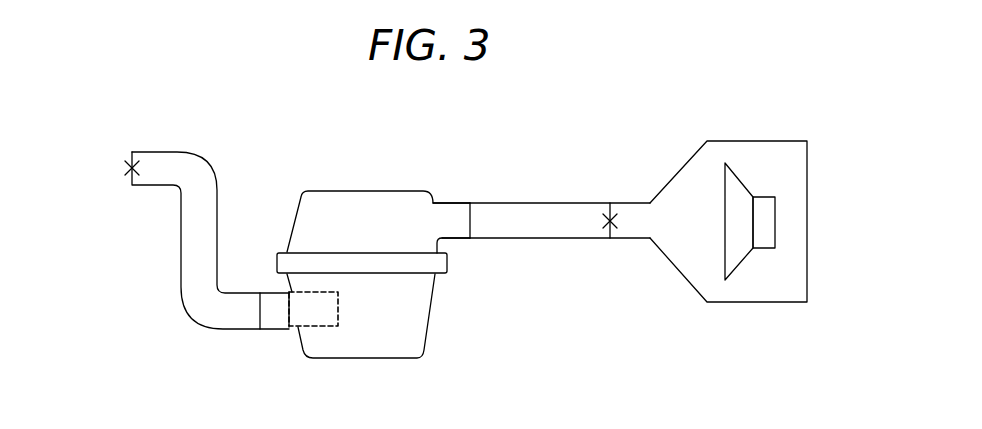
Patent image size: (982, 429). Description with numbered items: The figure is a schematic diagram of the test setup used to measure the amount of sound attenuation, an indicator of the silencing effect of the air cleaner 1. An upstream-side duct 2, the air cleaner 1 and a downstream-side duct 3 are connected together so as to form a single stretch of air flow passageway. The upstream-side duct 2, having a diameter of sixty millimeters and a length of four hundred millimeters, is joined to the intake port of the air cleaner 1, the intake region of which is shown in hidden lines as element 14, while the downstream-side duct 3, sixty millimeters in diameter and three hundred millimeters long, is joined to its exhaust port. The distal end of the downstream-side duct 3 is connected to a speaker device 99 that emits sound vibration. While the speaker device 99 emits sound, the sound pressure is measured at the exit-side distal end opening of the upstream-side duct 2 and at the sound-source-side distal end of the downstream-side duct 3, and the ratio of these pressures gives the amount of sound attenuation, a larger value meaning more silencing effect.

The air cleaner 1 is at (353, 370).
The upstream-side duct 2 is at (166, 255).
The downstream-side duct 3 is at (561, 248).
The inlet pipe 14 is at (319, 330).
The speaker device 99 is at (774, 132).